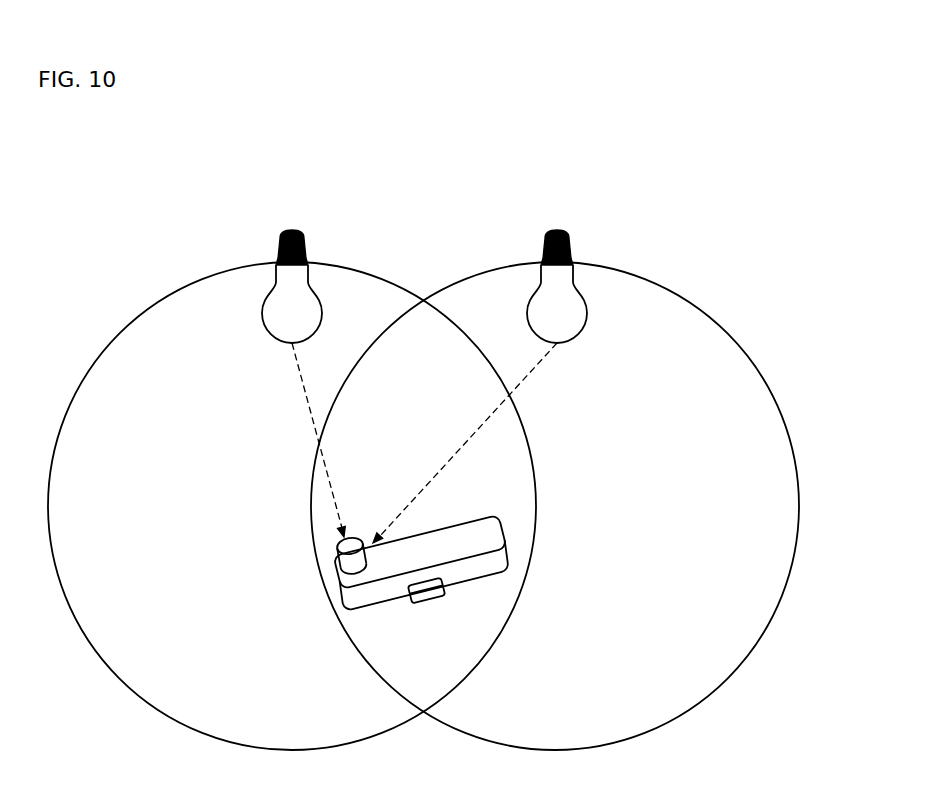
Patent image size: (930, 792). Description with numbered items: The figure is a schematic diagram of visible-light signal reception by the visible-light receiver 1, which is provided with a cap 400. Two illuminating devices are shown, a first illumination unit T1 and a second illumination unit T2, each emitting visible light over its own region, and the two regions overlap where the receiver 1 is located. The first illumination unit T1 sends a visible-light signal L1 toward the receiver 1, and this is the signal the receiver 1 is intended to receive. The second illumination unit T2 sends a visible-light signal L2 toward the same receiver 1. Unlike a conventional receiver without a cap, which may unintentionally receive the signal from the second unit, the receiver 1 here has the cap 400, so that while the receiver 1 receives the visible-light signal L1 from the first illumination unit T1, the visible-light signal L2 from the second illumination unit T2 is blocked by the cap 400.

The first illumination unit T1 is at (293, 229).
The second illumination unit T2 is at (558, 229).
The visible-light signal L1 is at (305, 392).
The visible-light signal L2 is at (480, 427).
The visible-light receiver 1 is at (520, 535).
The cap 400 is at (343, 563).